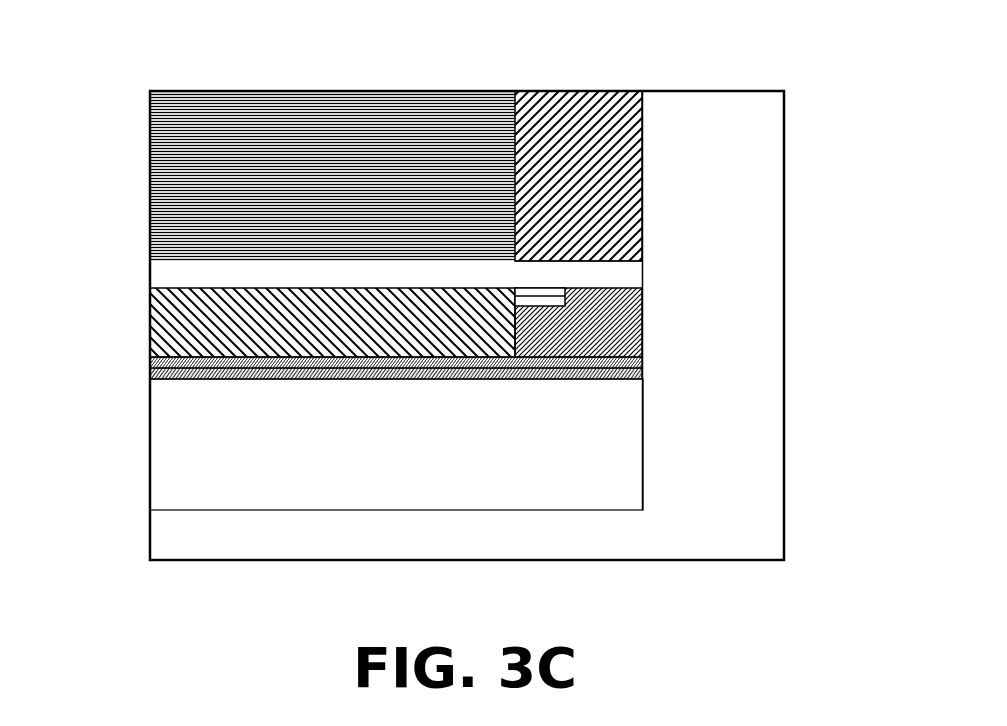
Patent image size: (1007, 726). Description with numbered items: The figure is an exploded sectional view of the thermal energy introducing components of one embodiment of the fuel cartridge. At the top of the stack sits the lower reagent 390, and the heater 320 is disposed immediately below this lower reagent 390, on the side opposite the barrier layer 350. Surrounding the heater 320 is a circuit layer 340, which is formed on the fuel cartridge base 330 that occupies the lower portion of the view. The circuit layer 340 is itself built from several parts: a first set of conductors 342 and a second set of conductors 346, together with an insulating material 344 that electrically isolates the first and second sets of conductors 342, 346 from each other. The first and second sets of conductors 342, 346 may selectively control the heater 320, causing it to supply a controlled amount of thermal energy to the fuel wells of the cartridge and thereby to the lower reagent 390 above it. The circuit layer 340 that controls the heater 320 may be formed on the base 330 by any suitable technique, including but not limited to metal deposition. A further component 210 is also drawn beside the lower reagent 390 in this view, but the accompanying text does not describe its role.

The dielectric layer 210 is at (642, 125).
The heater 320 is at (178, 312).
The fuel cartridge base 330 is at (187, 463).
The circuit layer 340 is at (517, 384).
The first set of conductors 342 is at (565, 296).
The insulating material 344 is at (627, 348).
The second set of conductors 346 is at (642, 380).
The barrier layer 350 is at (628, 274).
The lower reagent 390 is at (180, 151).